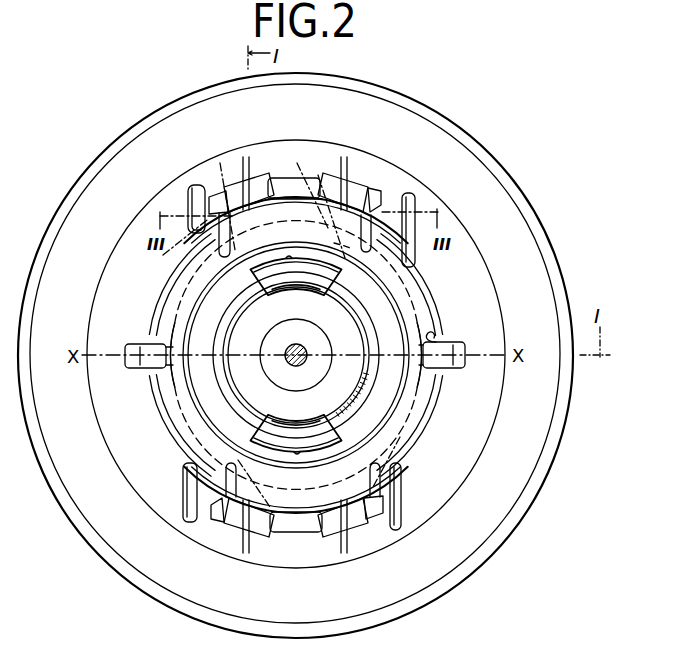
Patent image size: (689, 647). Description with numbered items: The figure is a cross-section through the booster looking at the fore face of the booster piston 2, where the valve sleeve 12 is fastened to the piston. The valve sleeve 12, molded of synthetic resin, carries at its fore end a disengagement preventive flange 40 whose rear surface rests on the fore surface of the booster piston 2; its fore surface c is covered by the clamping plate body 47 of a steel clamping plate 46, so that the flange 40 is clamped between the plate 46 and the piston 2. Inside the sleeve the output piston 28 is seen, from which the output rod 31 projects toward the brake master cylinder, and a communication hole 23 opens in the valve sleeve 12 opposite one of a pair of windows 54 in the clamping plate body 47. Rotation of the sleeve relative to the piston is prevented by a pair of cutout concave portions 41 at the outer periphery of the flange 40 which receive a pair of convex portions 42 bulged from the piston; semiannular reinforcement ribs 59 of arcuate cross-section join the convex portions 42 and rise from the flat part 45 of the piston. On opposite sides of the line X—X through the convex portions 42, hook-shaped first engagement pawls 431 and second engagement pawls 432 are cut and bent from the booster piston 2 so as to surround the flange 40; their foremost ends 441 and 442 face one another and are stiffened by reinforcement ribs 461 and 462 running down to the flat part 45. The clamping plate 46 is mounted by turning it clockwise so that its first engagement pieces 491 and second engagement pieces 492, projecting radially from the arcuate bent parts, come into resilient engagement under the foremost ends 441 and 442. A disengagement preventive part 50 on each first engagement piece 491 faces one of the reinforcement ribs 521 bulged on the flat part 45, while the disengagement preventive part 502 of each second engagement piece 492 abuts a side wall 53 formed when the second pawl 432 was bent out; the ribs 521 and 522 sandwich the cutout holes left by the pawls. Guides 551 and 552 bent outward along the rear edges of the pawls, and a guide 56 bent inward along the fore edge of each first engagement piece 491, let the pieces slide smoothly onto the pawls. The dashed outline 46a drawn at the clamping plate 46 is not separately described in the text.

The booster piston 2 is at (92, 163).
The valve sleeve 12 is at (434, 408).
The communication hole 23 is at (329, 284).
The output piston 28 is at (319, 343).
The output rod 31 is at (296, 366).
The disengagement preventive flange 40 is at (422, 292).
The cutout concave portions 41 is at (434, 334).
The convex portions 42 is at (146, 346).
The first engagement pawls 431 is at (259, 175).
The second engagement pawls 432 is at (329, 175).
The foremost end of first engagement pawl 441 is at (252, 206).
The foremost end of second engagement pawl 442 is at (333, 206).
The flat portion 45 is at (106, 434).
The clamping plate 46 is at (195, 299).
The rotor ring edge 46a is at (331, 257).
The reinforcement ribs 461 is at (244, 158).
The reinforcement ribs 462 is at (345, 158).
The clamping plate body 47 is at (195, 400).
The first engagement pieces 491 is at (221, 200).
The second engagement pieces 492 is at (303, 176).
The disengagement preventive part 50 is at (214, 200).
The disengagement preventive part 502 is at (368, 232).
The reinforcement ribs 521 is at (190, 193).
The reinforcement ribs 522 is at (407, 193).
The side wall 53 is at (379, 202).
The windows 54 is at (289, 259).
The guide 551 is at (232, 224).
The guide 552 is at (295, 355).
The guide 56 is at (284, 203).
The semiannular reinforcement ribs 59 is at (420, 273).
The fore surface of the disengagement preventive flange c is at (178, 309).